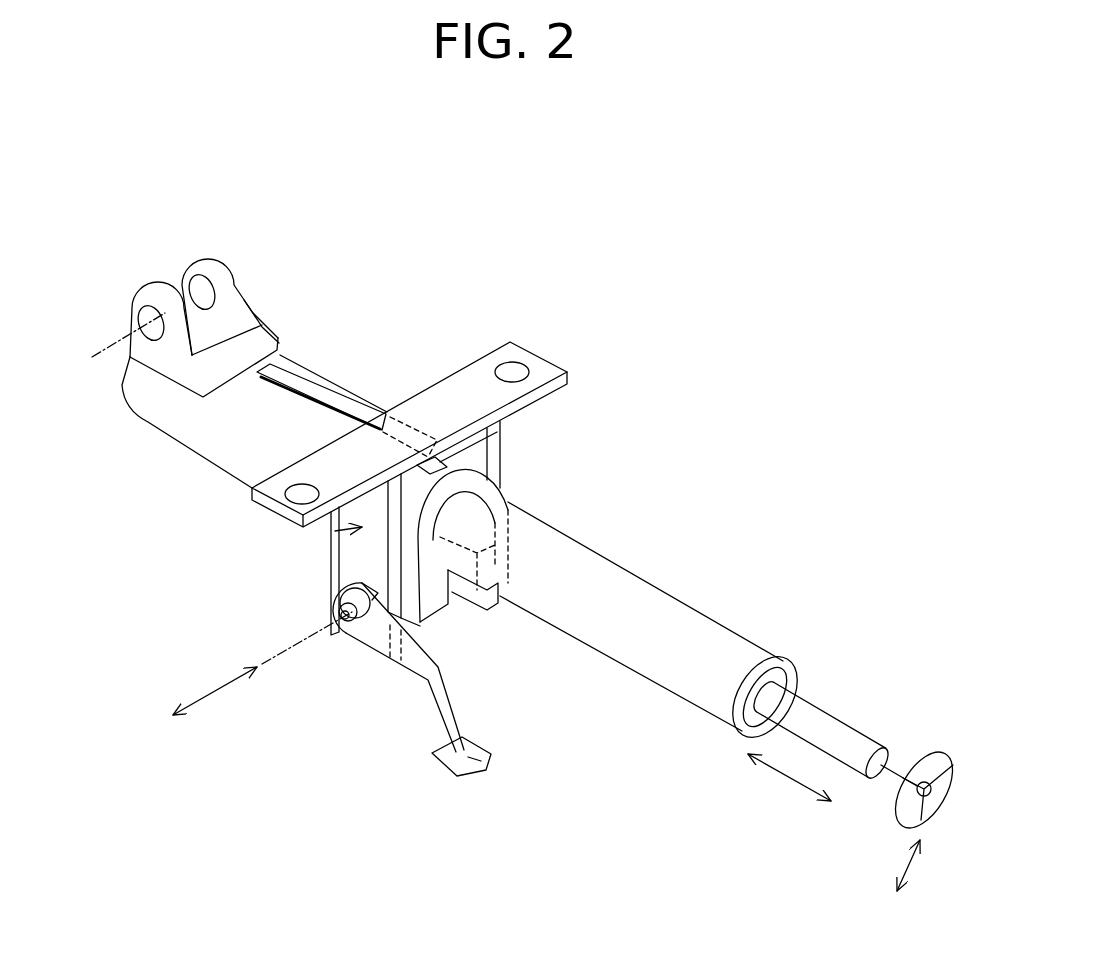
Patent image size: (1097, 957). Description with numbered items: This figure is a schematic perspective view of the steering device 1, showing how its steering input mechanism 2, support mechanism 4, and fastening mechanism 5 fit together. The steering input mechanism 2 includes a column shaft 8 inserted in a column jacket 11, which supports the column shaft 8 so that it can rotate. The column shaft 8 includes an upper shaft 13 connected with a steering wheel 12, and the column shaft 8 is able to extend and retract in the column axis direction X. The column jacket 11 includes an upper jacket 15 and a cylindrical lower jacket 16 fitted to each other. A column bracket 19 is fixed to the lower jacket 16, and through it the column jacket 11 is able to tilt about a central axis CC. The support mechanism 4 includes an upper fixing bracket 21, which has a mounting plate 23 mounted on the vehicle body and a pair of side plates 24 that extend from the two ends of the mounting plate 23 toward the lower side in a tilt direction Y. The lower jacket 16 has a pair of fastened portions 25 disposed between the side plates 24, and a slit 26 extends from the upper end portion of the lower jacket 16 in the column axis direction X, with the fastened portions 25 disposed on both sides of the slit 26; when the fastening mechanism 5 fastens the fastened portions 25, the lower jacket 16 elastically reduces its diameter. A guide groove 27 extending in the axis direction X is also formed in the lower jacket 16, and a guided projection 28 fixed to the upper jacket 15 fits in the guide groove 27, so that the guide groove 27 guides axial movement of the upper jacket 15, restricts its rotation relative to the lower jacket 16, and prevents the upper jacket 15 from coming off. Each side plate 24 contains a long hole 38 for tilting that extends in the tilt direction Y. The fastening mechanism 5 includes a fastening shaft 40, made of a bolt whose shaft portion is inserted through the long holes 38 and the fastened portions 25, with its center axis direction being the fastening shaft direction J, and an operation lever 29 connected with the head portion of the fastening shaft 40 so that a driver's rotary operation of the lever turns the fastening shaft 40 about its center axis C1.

The steering device 1 is at (860, 718).
The steering input mechanism 2 is at (827, 702).
The support mechanism 4 is at (416, 462).
The fastening mechanism 5 is at (436, 680).
The column shaft 8 is at (812, 702).
The column jacket 11 is at (668, 625).
The steering wheel 12 is at (941, 748).
The upper shaft 13 is at (865, 743).
The upper jacket 15 is at (667, 603).
The lower jacket 16 is at (309, 387).
The column bracket 19 is at (242, 301).
The upper fixing bracket 21 is at (342, 541).
The mounting plate 23 is at (470, 380).
The side plates 24 is at (500, 445).
The fastened portions 25 is at (519, 573).
The slit 26 is at (452, 604).
The guide groove 27 is at (311, 392).
The guided projection 28 is at (388, 412).
The operation lever 29 is at (472, 722).
The long hole for tilting 38 is at (376, 625).
The fastening shaft 40 is at (352, 622).
The central axis of the tilt pivot CC is at (96, 347).
The center axis of the shaft portion C1 is at (271, 652).
The fastening shaft direction J is at (220, 692).
The column axis direction X is at (788, 780).
The tilt direction Y is at (910, 860).